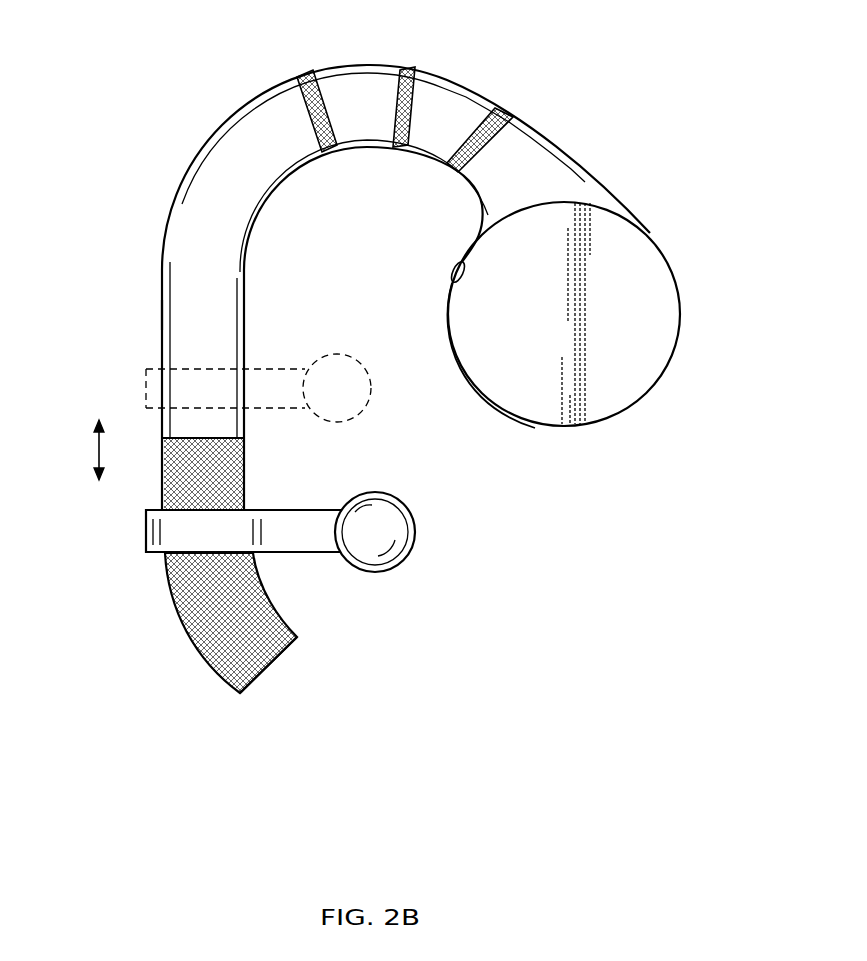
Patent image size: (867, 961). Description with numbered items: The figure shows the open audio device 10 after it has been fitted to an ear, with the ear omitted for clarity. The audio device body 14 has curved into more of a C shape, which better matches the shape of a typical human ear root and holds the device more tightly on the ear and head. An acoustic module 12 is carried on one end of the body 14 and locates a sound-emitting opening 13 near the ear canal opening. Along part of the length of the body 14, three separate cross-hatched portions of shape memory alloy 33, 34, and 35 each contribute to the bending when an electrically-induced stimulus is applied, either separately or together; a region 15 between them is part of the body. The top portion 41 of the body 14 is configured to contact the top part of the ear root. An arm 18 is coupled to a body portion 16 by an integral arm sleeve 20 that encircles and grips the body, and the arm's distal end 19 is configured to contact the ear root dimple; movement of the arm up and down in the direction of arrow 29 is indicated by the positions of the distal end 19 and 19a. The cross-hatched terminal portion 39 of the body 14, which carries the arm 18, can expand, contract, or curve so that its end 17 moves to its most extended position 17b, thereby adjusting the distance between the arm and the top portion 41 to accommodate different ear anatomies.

The audio device 10 is at (605, 448).
The acoustic module 12 is at (645, 250).
The sound-emitting opening 13 is at (452, 272).
The audio device body 14 is at (148, 182).
The hook body section 15 is at (350, 82).
The body portion 16 is at (162, 316).
The end 17 is at (299, 640).
The most extended position 17b is at (243, 696).
The arm 18 is at (272, 530).
The distal end 19 is at (395, 515).
The position of distal end 19a is at (342, 358).
The arm sleeve 20 is at (146, 535).
The arrow 29 is at (97, 450).
The shape memory alloy portion 33 is at (505, 118).
The shape memory alloy portion 34 is at (406, 78).
The shape memory alloy portion 35 is at (332, 150).
The terminal portion 39 is at (173, 597).
The top portion 41 is at (379, 151).